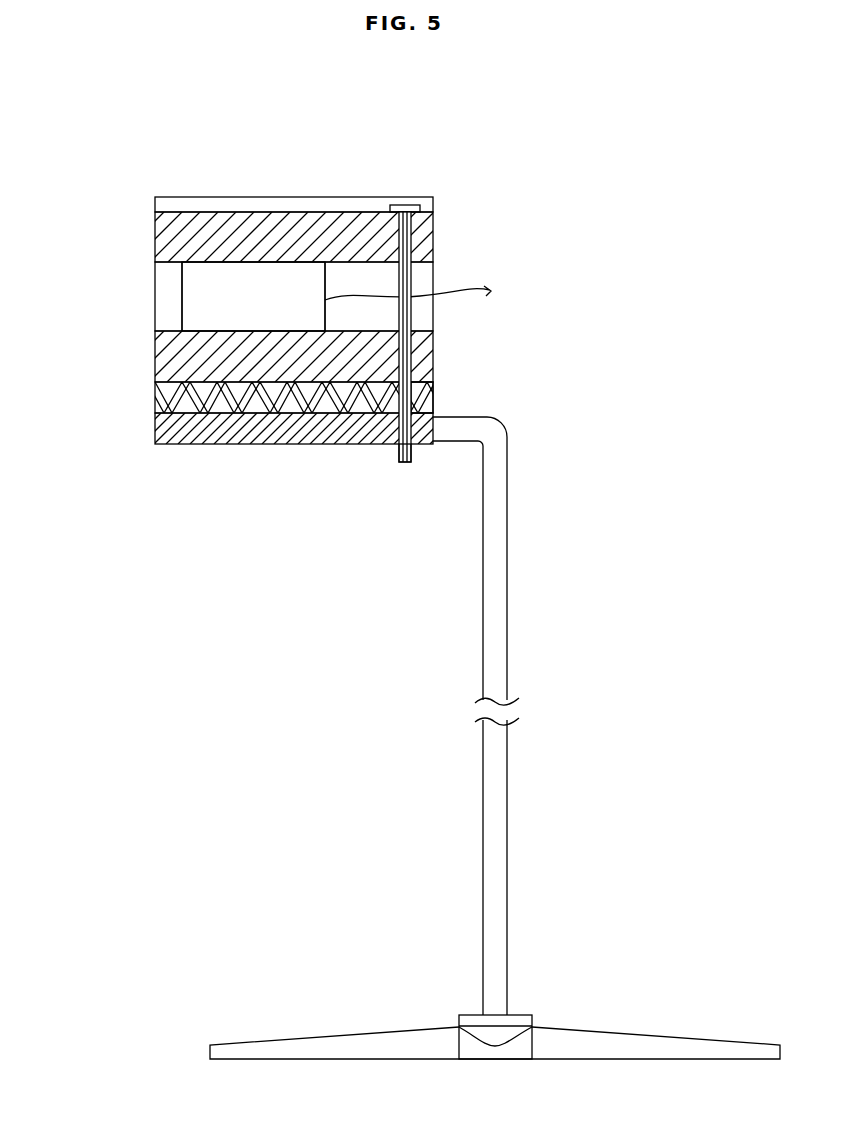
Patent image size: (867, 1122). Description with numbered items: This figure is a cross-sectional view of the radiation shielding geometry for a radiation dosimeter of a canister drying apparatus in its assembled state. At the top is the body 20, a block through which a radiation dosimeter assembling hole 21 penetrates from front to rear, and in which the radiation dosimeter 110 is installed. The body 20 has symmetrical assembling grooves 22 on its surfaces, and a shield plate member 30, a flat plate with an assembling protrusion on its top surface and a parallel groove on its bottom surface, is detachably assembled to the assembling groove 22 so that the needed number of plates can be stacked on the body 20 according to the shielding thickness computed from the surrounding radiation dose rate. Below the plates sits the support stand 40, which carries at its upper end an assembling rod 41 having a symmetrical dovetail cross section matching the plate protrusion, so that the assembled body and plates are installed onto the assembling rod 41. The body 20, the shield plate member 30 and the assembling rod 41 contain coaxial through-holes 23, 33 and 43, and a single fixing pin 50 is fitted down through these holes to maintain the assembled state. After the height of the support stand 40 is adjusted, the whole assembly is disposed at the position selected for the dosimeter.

The body 20 is at (170, 228).
The radiation dosimeter assembling hole 21 is at (167, 302).
The assembling groove 22 is at (305, 200).
The through-hole 23 is at (418, 232).
The shield plate member 30 is at (170, 403).
The through-hole 33 is at (430, 393).
The support stand 40 is at (495, 580).
The assembling rod 41 is at (182, 430).
The through-hole 43 is at (395, 442).
The fixing pin 50 is at (408, 207).
The radiation dosimeter 110 is at (233, 278).